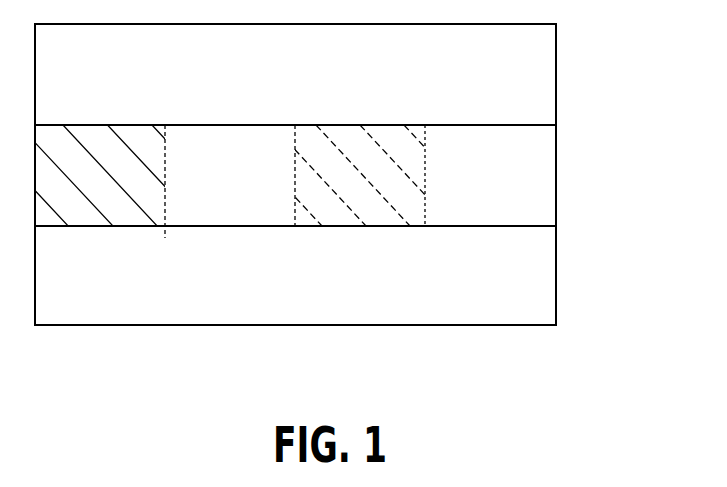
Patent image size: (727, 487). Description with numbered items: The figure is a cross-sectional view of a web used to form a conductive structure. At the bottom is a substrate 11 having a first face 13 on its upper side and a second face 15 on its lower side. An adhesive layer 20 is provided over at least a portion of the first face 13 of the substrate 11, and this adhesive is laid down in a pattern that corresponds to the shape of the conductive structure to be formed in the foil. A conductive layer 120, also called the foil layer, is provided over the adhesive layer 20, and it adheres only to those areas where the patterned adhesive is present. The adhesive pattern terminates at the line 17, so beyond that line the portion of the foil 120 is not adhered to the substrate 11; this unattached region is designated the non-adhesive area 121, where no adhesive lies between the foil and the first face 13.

The conductive layer 120 is at (556, 78).
The adhesive layer 20 is at (556, 172).
The first face 13 is at (556, 236).
The substrate 11 is at (556, 274).
The second face 15 is at (556, 310).
The line 17 is at (164, 238).
The non-adhesive area 121 is at (233, 216).